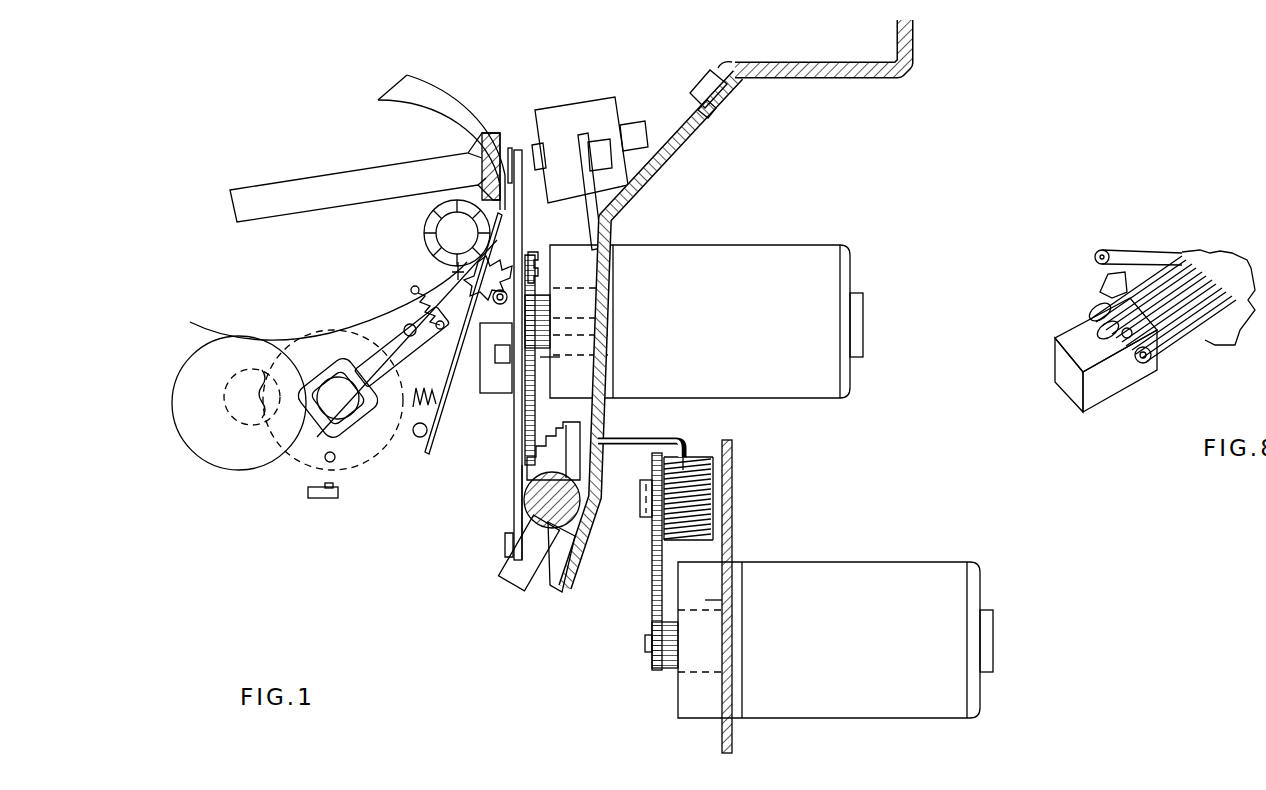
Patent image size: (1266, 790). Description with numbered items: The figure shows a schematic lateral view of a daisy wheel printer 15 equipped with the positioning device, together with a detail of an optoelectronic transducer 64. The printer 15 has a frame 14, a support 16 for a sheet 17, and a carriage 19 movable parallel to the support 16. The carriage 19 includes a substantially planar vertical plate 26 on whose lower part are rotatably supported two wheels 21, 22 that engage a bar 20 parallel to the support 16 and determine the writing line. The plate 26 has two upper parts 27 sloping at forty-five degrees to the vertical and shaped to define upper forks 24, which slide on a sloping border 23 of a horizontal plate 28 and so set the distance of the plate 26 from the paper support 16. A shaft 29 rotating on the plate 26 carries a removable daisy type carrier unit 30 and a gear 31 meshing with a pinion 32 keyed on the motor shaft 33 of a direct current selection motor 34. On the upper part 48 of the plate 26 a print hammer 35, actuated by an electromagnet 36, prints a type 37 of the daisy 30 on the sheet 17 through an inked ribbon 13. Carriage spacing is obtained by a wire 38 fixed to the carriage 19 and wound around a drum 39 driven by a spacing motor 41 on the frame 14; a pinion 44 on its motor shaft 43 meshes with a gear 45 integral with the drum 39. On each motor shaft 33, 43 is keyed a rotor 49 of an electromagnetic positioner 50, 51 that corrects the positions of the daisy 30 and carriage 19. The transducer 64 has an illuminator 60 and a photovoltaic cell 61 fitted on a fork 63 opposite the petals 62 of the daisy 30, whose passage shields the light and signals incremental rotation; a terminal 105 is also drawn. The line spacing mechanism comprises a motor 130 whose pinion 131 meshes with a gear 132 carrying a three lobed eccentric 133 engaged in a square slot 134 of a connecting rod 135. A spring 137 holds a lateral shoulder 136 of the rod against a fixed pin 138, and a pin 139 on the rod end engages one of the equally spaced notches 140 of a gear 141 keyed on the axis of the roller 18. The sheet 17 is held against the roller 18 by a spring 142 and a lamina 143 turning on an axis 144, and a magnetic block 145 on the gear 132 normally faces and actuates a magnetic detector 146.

In FIG. 1, the inked ribbon 13 is at (501, 150).
In FIG. 1, the frame 14 is at (735, 490).
In FIG. 1, the printer 15 is at (274, 139).
In FIG. 1, the support 16 is at (480, 137).
In FIG. 1, the sheet 17 is at (395, 95).
In FIG. 1, the roller 18 is at (436, 236).
In FIG. 1, the carriage 19 is at (740, 203).
In FIG. 1, the bar 20 is at (575, 515).
In FIG. 1, the wheel 21 is at (572, 445).
In FIG. 1, the wheel 22 is at (520, 590).
In FIG. 1, the sloping border 23 is at (720, 70).
In FIG. 1, the upper fork 24 is at (725, 88).
In FIG. 1, the plate 26 is at (608, 230).
In FIG. 1, the upper part 27 is at (700, 112).
In FIG. 1, the horizontal plate 28 is at (805, 70).
In FIG. 1, the shaft 29 is at (515, 390).
In FIG. 1, the type carrier unit 30 is at (515, 415).
In FIG. 8, the type carrier unit 30 is at (1234, 305).
In FIG. 1, the gear 31 is at (538, 262).
In FIG. 1, the pinion 32 is at (545, 357).
In FIG. 1, the motor shaft 33 is at (605, 315).
In FIG. 1, the selection motor 34 is at (850, 275).
In FIG. 1, the print hammer 35 is at (542, 152).
In FIG. 1, the electromagnet 36 is at (590, 110).
In FIG. 1, the type 37 is at (517, 148).
In FIG. 1, the wire 38 is at (692, 460).
In FIG. 1, the drum 39 is at (712, 528).
In FIG. 1, the spacing motor 41 is at (808, 572).
In FIG. 1, the motor shaft 43 is at (647, 652).
In FIG. 1, the pinion 44 is at (655, 658).
In FIG. 1, the gear 45 is at (655, 563).
In FIG. 1, the upper part 48 is at (590, 183).
In FIG. 1, the rotor 49 is at (605, 353).
In FIG. 1, the electromagnetic positioner 50 is at (583, 273).
In FIG. 1, the electromagnetic positioner 51 is at (722, 600).
In FIG. 8, the illuminator 60 is at (1127, 340).
In FIG. 8, the photovoltaic cell 61 is at (1150, 362).
In FIG. 8, the petals 62 is at (1160, 258).
In FIG. 8, the fork 63 is at (1062, 380).
In FIG. 8, the optoelectronic transducer 64 is at (1054, 270).
In FIG. 8, the terminal 105 is at (1140, 268).
In FIG. 1, the motor 130 is at (178, 412).
In FIG. 1, the pinion 131 is at (222, 402).
In FIG. 1, the gear 132 is at (300, 345).
In FIG. 1, the three lobed eccentric 133 is at (330, 370).
In FIG. 1, the square slot 134 is at (317, 437).
In FIG. 1, the connecting rod 135 is at (392, 445).
In FIG. 1, the lateral shoulder 136 is at (409, 337).
In FIG. 1, the spring 137 is at (395, 293).
In FIG. 1, the fixed pin 138 is at (405, 325).
In FIG. 1, the pin 139 is at (496, 358).
In FIG. 1, the notches 140 is at (426, 293).
In FIG. 1, the gear 141 is at (463, 283).
In FIG. 1, the spring 142 is at (428, 431).
In FIG. 1, the lamina 143 is at (437, 400).
In FIG. 1, the axis 144 is at (432, 456).
In FIG. 1, the magnetic block 145 is at (336, 461).
In FIG. 1, the magnetic detector 146 is at (322, 498).